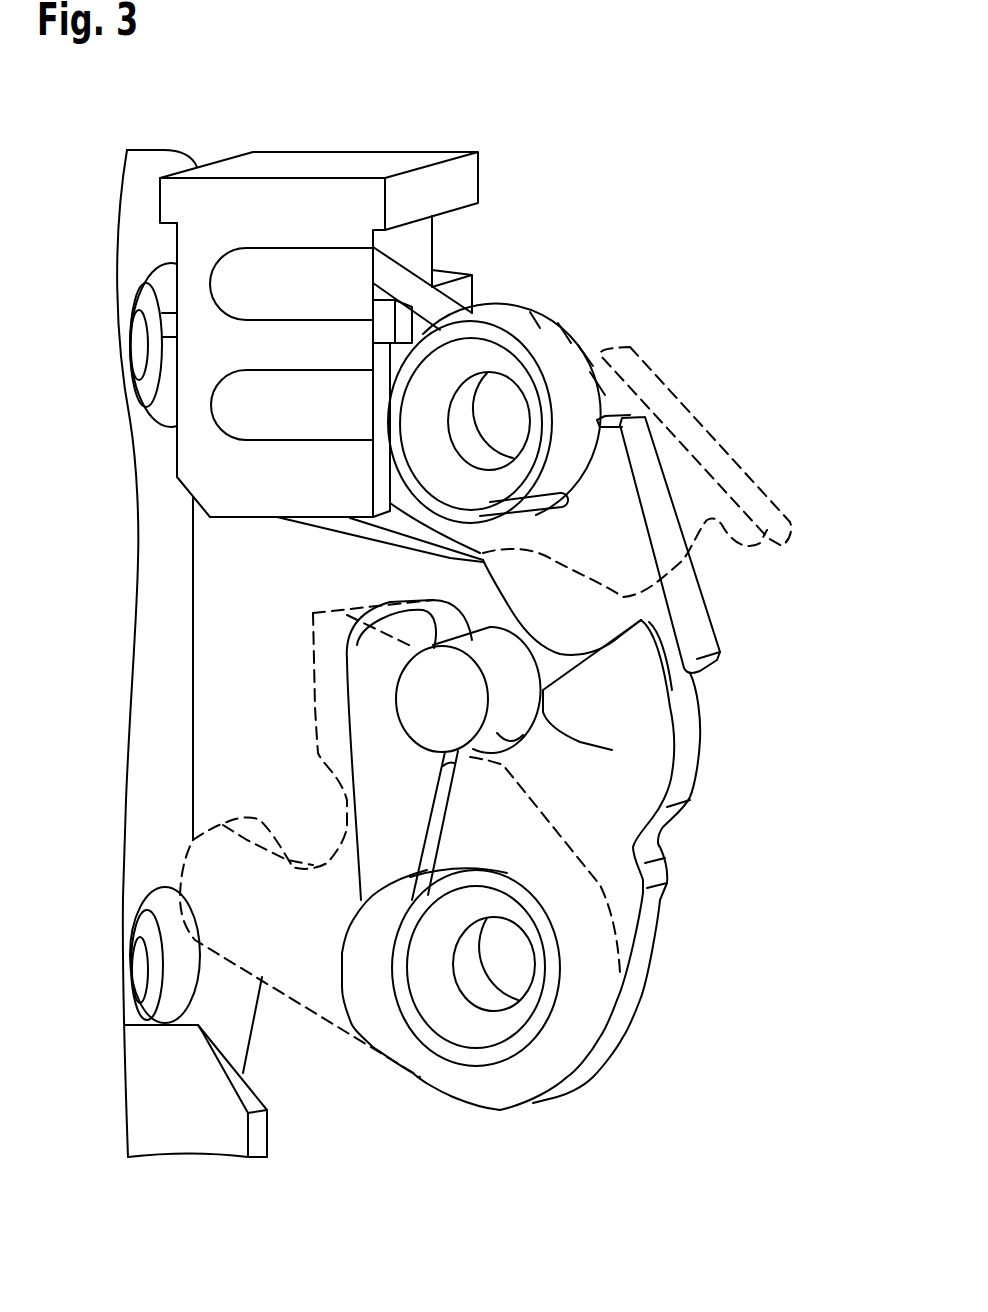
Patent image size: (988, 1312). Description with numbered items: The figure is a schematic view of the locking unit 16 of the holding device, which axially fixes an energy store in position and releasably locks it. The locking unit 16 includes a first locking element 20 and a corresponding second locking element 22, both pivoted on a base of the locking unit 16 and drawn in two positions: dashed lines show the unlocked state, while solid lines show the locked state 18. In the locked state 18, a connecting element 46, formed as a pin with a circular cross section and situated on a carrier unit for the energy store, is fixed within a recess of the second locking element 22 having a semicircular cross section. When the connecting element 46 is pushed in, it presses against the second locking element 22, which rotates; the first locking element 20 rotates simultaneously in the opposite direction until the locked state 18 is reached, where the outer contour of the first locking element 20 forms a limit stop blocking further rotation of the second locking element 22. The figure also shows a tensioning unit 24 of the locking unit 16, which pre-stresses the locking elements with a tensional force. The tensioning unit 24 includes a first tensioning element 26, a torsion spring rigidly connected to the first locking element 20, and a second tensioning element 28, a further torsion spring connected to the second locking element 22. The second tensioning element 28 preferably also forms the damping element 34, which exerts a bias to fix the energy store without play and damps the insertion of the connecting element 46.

The locking unit 16 is at (657, 140).
The locked state 18 is at (728, 677).
The first locking element 20 is at (613, 615).
The second locking element 22 is at (620, 903).
The tensioning unit 24 is at (536, 345).
The first tensioning element 26 is at (493, 340).
The second tensioning element 28 is at (361, 900).
The damping element 34 is at (443, 813).
The connecting element 46 is at (463, 713).